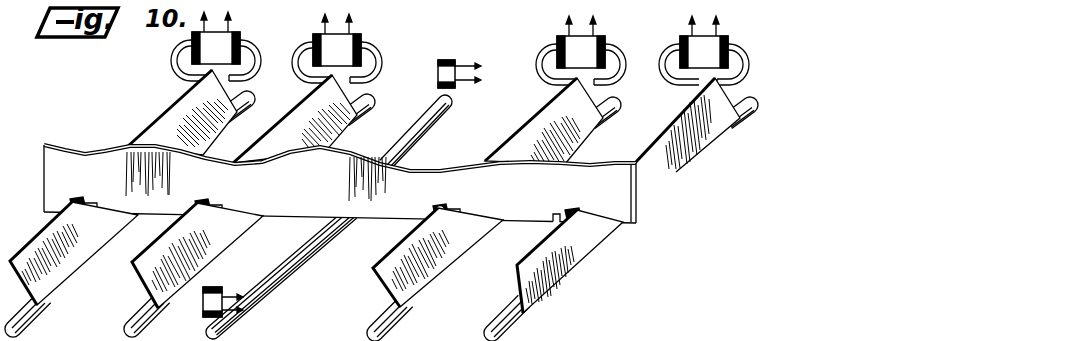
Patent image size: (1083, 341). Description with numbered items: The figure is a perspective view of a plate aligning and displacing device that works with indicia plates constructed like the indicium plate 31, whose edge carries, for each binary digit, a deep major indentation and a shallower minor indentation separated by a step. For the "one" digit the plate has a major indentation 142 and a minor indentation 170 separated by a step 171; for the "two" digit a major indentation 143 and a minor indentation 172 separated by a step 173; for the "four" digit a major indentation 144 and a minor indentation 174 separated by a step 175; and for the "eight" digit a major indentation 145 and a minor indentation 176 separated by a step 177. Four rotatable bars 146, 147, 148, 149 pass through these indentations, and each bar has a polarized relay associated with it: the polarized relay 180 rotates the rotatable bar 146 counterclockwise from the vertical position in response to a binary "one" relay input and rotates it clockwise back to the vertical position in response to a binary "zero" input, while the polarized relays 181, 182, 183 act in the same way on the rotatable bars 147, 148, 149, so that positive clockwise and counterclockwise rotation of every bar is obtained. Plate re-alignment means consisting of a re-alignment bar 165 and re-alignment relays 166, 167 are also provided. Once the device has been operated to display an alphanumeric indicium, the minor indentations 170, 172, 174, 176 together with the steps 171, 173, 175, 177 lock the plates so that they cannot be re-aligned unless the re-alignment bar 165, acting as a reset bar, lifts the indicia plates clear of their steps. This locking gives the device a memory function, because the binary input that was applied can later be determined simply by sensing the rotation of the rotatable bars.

The indicium plate 31 is at (634, 206).
The major indentation 142 is at (74, 199).
The major indentation 143 is at (198, 201).
The major indentation 144 is at (436, 208).
The major indentation 145 is at (590, 198).
The rotatable bar 146 is at (66, 278).
The rotatable bar 147 is at (226, 247).
The rotatable bar 148 is at (432, 278).
The rotatable bar 149 is at (553, 283).
The re-alignment bar 165 is at (441, 113).
The re-alignment relay 166 is at (448, 59).
The re-alignment relay 167 is at (203, 308).
The minor indentation 170 is at (93, 209).
The step 171 is at (89, 202).
The minor indentation 172 is at (212, 210).
The step 173 is at (219, 204).
The minor indentation 174 is at (446, 222).
The step 175 is at (455, 206).
The minor indentation 176 is at (557, 210).
The step 177 is at (571, 222).
The polarized relay 180 is at (173, 52).
The polarized relay 181 is at (311, 50).
The polarized relay 182 is at (606, 44).
The polarized relay 183 is at (729, 46).